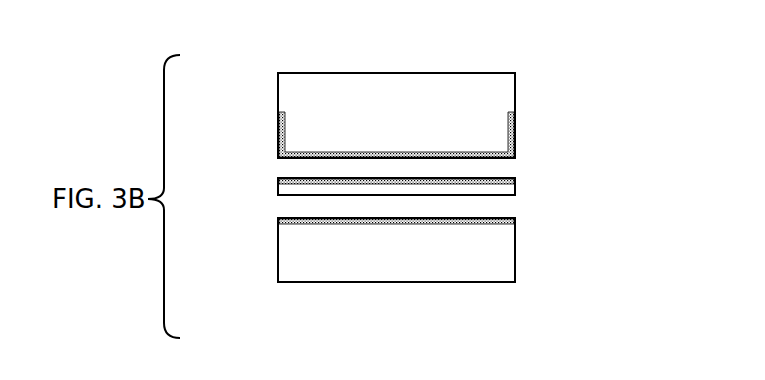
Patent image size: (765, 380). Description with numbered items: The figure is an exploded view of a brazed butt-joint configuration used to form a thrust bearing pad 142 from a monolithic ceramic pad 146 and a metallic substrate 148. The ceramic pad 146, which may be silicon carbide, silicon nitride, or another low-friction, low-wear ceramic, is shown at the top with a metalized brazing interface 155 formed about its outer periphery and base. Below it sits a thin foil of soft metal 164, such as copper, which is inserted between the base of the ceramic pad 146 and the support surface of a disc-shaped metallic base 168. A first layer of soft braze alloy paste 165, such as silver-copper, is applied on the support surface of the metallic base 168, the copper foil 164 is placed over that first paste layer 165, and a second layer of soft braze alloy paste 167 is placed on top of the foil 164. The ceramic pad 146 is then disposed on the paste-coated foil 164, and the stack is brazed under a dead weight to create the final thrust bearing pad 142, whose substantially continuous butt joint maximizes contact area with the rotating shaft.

The thrust bearing pad 142 is at (563, 53).
The ceramic pad 146 is at (410, 121).
The metallic substrate 148 is at (367, 290).
The adhesive layer / liner on body 155 is at (515, 132).
The soft metal foil 164 is at (278, 190).
The first layer of soft braze alloy paste 165 is at (515, 221).
The second layer of soft braze alloy paste 167 is at (515, 181).
The metallic base 168 is at (278, 248).